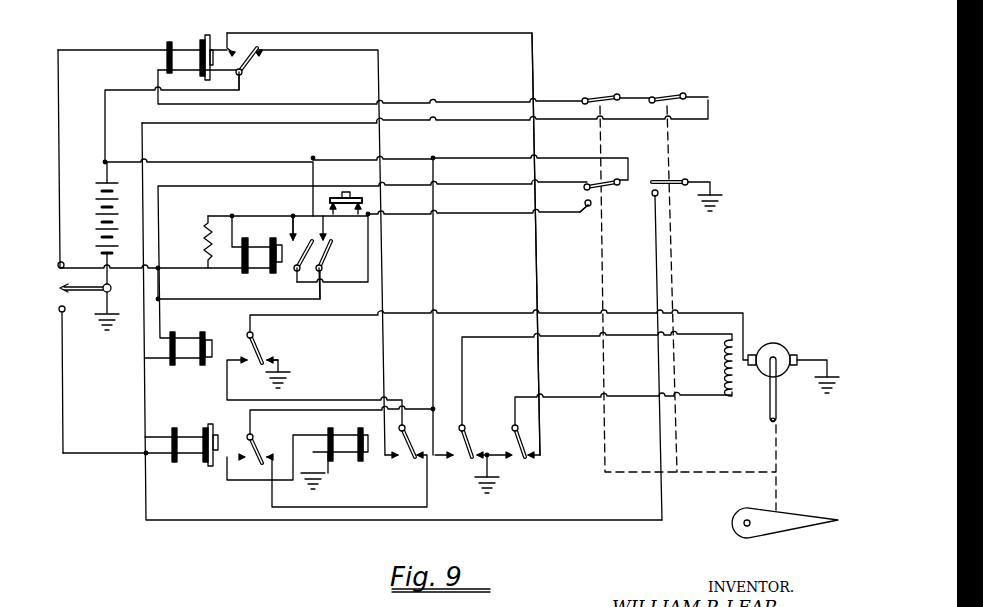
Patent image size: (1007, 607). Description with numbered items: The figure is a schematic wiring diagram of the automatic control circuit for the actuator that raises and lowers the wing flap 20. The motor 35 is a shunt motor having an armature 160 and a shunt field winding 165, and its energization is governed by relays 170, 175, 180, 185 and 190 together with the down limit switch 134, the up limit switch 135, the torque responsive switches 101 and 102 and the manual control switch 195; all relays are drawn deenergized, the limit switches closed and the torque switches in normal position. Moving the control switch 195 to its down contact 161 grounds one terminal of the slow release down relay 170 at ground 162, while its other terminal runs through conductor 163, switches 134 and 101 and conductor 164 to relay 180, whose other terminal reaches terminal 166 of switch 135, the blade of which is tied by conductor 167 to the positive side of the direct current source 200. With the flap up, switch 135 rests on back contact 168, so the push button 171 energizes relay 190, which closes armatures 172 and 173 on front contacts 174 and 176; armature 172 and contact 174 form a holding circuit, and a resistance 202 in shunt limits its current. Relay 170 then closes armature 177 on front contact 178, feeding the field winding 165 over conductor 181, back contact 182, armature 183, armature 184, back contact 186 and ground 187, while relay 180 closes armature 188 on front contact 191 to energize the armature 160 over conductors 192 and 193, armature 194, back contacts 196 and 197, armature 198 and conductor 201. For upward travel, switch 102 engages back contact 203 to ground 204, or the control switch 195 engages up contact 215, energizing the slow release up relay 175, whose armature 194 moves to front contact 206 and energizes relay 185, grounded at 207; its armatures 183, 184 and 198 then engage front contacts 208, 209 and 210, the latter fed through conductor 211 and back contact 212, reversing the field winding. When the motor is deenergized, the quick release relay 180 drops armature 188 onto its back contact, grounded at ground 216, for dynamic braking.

The wing flap 20 is at (772, 532).
The motor 35 is at (783, 318).
The torque responsive switch 101 is at (670, 97).
The torque responsive switch 102 is at (680, 182).
The down limit switch 134 is at (598, 98).
The up limit switch 135 is at (606, 187).
The armature 160 is at (782, 346).
The down contact 161 is at (66, 262).
The ground 162 is at (110, 312).
The conductor 163 is at (447, 88).
The conductor 164 is at (438, 120).
The shunt field winding 165 is at (726, 362).
The terminal 166 is at (588, 188).
The conductor 167 is at (278, 150).
The back contact 168 is at (585, 206).
The down relay 170 is at (188, 44).
The push button 171 is at (352, 196).
The armature 172 is at (291, 266).
The armature 173 is at (331, 254).
The front contact 174 is at (293, 216).
The up relay 175 is at (190, 462).
The front contact 176 is at (327, 242).
The armature 177 is at (250, 58).
The front contact 178 is at (238, 46).
The relay 180 is at (188, 342).
The conductor 181 is at (534, 42).
The back contact 182 is at (541, 452).
The armature 183 is at (522, 437).
The armature 184 is at (466, 428).
The relay 185 is at (340, 436).
The back contact 186 is at (474, 464).
The ground 187 is at (492, 478).
The armature 188 is at (248, 336).
The relay 190 is at (247, 240).
The front contact 191 is at (314, 381).
The conductor 192 is at (436, 270).
The conductor 193 is at (360, 395).
The armature 194 is at (249, 434).
The control switch 195 is at (112, 288).
The back contact 196 is at (270, 455).
The back contact 197 is at (411, 464).
The armature 198 is at (404, 446).
The source of direct current 200 is at (96, 190).
The conductor 201 is at (500, 304).
The resistance 202 is at (205, 244).
The back contact 203 is at (655, 197).
The ground 204 is at (714, 193).
The front contact 206 is at (243, 460).
The ground 207 is at (322, 474).
The front contact 208 is at (516, 460).
The front contact 209 is at (455, 459).
The front contact 210 is at (399, 458).
The conductor 211 is at (384, 296).
The back contact 212 is at (259, 46).
The up contact 215 is at (64, 318).
The ground 216 is at (288, 372).